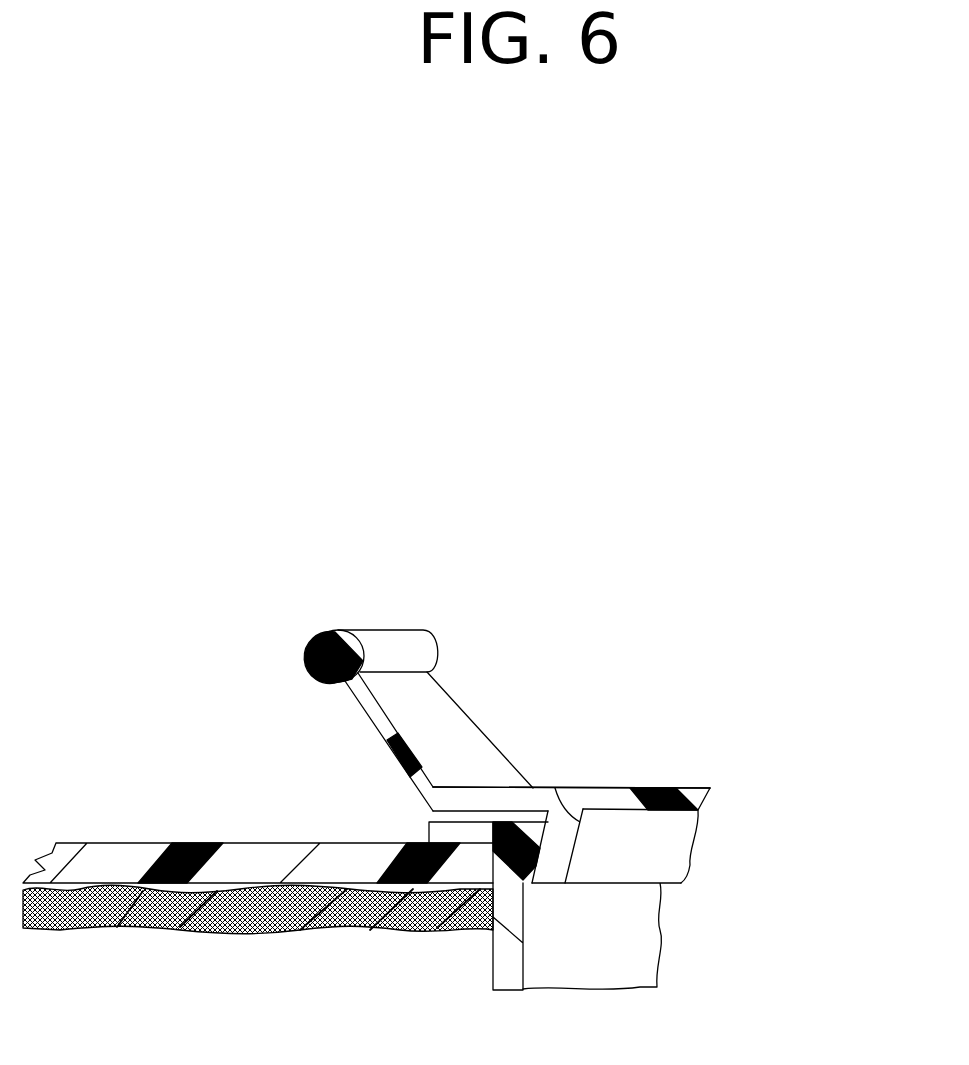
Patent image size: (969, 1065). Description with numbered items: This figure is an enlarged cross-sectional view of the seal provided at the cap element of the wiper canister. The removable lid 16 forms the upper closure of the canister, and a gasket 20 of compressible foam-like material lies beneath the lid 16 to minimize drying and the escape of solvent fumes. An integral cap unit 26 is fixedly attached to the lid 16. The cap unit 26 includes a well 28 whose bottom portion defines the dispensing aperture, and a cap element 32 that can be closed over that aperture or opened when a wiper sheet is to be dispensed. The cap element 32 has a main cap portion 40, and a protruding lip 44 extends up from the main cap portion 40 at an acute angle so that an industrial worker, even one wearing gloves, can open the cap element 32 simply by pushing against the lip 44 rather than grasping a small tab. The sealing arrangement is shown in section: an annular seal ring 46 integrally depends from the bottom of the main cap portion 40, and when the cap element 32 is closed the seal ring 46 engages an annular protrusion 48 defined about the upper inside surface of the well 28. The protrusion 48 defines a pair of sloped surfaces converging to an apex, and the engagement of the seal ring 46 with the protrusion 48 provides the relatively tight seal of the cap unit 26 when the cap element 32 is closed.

The lid 16 is at (103, 843).
The gasket 20 is at (123, 930).
The cap unit 26 is at (756, 955).
The well 28 is at (493, 980).
The cap element 32 is at (667, 750).
The main cap portion 40 is at (612, 788).
The protruding lip 44 is at (443, 720).
The seal ring 46 is at (667, 855).
The annular protrusion 48 is at (533, 867).